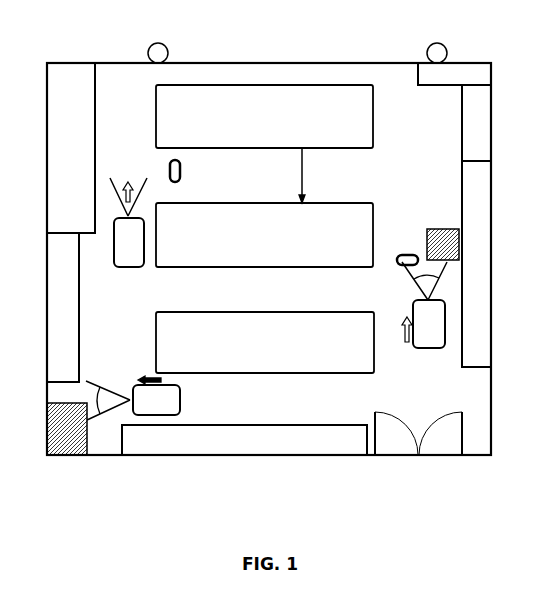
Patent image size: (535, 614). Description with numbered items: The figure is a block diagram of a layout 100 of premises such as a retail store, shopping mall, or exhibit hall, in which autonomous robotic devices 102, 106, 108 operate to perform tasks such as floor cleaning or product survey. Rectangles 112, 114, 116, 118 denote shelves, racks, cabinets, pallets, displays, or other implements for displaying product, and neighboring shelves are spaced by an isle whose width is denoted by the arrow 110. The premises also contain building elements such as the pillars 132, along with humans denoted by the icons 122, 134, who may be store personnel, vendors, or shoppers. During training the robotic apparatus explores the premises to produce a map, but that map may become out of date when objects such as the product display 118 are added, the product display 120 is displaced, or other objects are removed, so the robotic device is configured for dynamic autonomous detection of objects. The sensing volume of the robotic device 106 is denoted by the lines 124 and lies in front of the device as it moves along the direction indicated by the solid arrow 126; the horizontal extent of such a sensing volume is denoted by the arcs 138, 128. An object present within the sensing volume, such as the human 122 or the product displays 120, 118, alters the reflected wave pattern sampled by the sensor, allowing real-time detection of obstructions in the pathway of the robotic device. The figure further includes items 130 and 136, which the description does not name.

The layout 100 is at (269, 248).
The autonomous robotic device 102 is at (128, 222).
The autonomous robotic device 106 is at (424, 305).
The autonomous robotic device 108 is at (133, 398).
The arrow 110 is at (302, 178).
The rectangle 112 is at (264, 116).
The rectangle 114 is at (264, 235).
The rectangle 116 is at (265, 342).
The product display 118 is at (67, 429).
The product display 120 is at (443, 244).
The human 122 is at (124, 150).
The lines 124 is at (405, 256).
The solid arrow 126 is at (406, 340).
The arc 128 is at (105, 390).
The tag 130 is at (181, 174).
The pillar 132 is at (168, 56).
The human 134 is at (413, 291).
The field of view edge 136 is at (438, 285).
The arc 138 is at (128, 180).